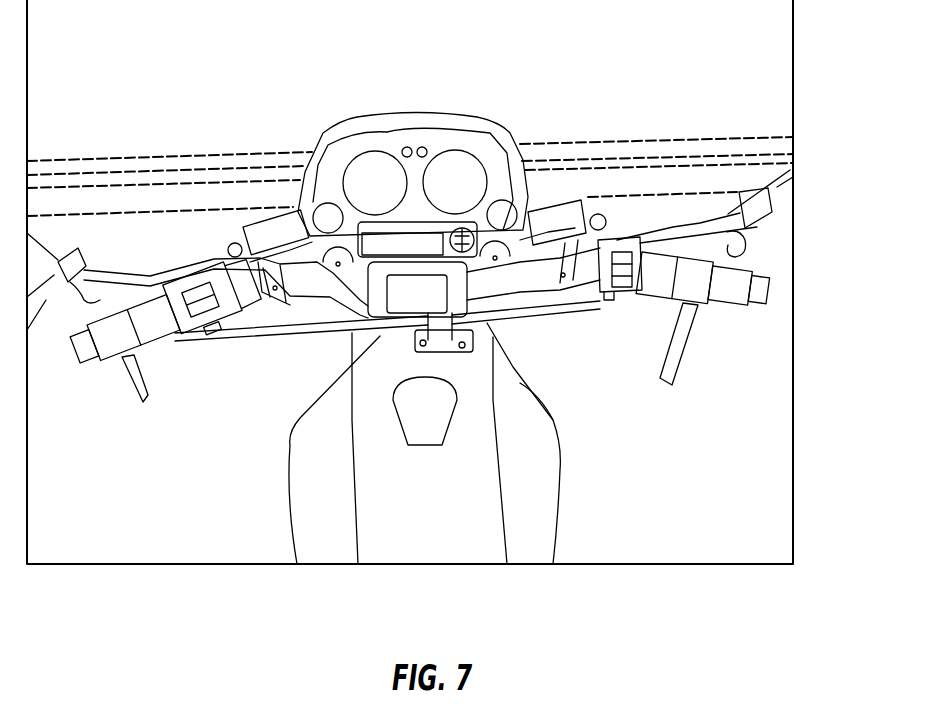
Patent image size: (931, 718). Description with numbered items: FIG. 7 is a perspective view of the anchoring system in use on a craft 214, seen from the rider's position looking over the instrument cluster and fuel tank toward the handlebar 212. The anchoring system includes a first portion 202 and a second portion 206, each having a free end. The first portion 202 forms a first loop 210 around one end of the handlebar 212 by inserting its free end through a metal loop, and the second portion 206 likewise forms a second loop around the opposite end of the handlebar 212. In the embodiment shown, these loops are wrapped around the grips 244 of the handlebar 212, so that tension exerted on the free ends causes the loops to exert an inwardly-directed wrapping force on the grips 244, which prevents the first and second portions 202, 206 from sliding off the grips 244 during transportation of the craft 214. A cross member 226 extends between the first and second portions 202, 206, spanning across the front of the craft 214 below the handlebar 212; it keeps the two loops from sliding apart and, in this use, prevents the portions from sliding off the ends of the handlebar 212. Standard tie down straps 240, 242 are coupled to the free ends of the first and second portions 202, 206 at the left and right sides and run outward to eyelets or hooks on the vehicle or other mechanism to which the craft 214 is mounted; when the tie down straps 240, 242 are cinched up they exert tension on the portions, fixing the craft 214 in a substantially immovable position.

The first portion 202 is at (124, 298).
The second portion 206 is at (703, 290).
The first loop 210 is at (155, 338).
The handlebar 212 is at (602, 300).
The craft 214 is at (390, 557).
The cross member 226 is at (330, 337).
The tie down strap 240 is at (44, 253).
The tie down strap 242 is at (790, 182).
The grips 244 is at (110, 350).